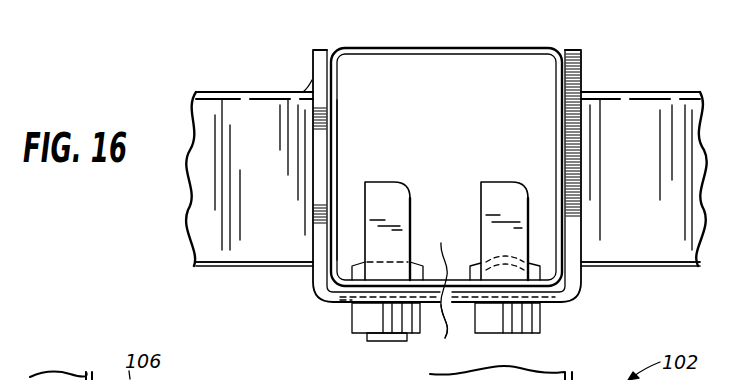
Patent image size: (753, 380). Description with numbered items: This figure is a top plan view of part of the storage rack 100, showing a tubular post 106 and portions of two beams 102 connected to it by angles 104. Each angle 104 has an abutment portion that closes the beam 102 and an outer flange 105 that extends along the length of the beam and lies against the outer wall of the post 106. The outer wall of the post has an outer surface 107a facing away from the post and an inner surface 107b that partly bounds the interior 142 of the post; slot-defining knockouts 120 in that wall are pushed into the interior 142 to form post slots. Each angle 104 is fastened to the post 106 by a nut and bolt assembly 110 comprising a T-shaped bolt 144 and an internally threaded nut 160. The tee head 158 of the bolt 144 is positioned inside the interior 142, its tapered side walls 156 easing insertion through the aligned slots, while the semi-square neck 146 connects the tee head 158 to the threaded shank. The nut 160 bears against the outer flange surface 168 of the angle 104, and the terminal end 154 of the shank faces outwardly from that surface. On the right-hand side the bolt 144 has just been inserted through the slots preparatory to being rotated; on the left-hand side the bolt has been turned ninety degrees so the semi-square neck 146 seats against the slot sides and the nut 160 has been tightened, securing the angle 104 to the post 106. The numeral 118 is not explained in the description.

The storage rack 100 is at (302, 84).
The beam 102 is at (636, 82).
The angle 104 is at (582, 278).
The outer flange 105 is at (332, 300).
The tubular post 106 is at (376, 42).
The outer surface 107a is at (451, 279).
The inner surface 107b is at (356, 280).
The nut and bolt assembly 110 is at (343, 337).
The panel flange 118 is at (232, 270).
The knockout 120 is at (385, 181).
The interior 142 is at (460, 68).
The bolt 144 is at (395, 341).
The semi-square neck 146 is at (560, 299).
The terminal end 154 is at (372, 341).
The tapered side wall 156 is at (512, 275).
The tee head 158 is at (417, 258).
The nut 160 is at (541, 320).
The outer flange surface 168 is at (440, 335).